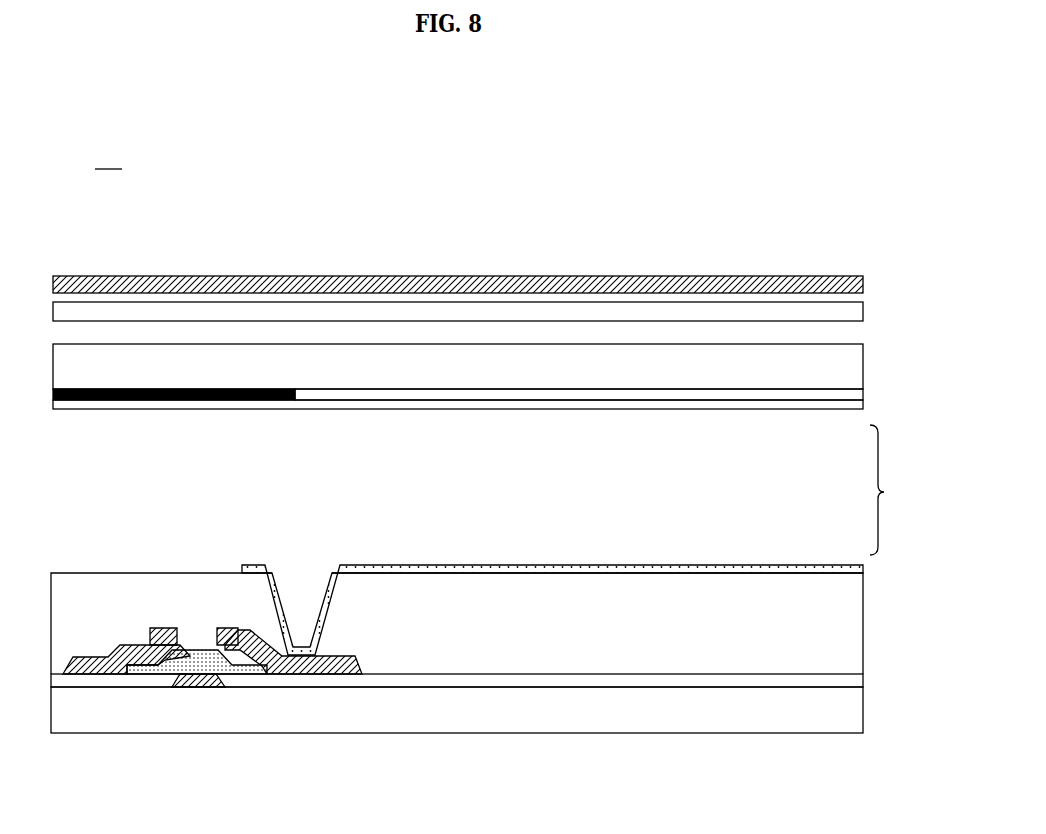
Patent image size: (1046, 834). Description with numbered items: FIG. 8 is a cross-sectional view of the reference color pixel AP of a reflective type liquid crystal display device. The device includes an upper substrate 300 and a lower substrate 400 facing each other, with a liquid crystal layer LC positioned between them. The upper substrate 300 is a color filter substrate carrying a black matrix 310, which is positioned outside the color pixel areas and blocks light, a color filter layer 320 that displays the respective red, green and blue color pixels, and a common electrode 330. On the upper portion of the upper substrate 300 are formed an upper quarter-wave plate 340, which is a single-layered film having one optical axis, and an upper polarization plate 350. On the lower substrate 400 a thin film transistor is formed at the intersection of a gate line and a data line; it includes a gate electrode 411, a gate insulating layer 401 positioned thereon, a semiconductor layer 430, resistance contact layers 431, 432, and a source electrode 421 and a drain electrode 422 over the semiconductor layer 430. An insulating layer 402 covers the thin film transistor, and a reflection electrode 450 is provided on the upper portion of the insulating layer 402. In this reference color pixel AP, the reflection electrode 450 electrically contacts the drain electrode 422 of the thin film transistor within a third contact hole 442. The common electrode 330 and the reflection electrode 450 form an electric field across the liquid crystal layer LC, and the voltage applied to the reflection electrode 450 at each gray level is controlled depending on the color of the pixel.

The upper substrate 300 is at (863, 368).
The black matrix 310 is at (113, 399).
The color filter layer 320 is at (863, 396).
The common electrode 330 is at (863, 406).
The upper quarter-wave plate 340 is at (863, 314).
The upper polarization plate 350 is at (863, 289).
The lower substrate 400 is at (852, 715).
The gate insulating layer 401 is at (852, 683).
The insulating layer 402 is at (852, 625).
The gate electrode 411 is at (195, 687).
The source electrode 421 is at (92, 651).
The drain electrode 422 is at (290, 674).
The semiconductor layer 430 is at (193, 650).
The resistance contact layer 431 is at (148, 646).
The resistance contact layer 432 is at (227, 628).
The third contact hole 442 is at (308, 597).
The reflection electrode 450 is at (562, 565).
The liquid crystal layer LC is at (894, 490).
The reference color pixel AP is at (108, 157).